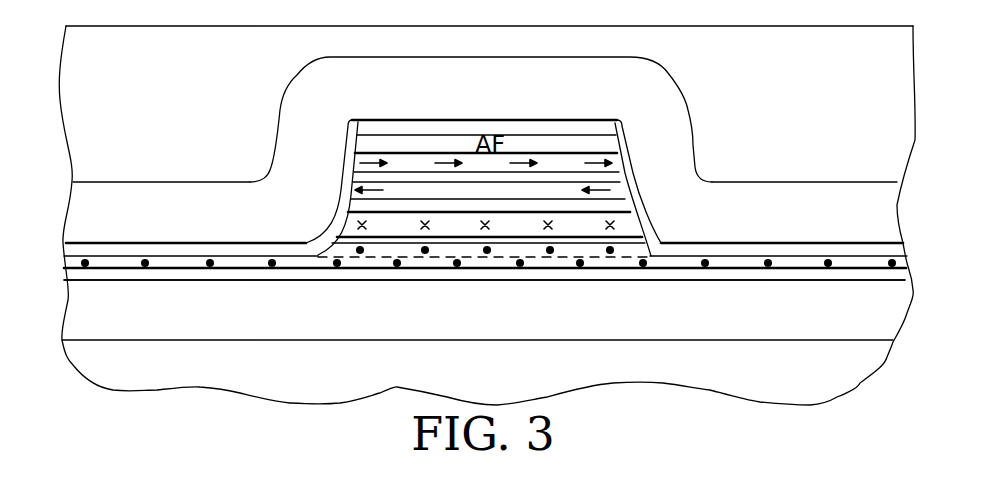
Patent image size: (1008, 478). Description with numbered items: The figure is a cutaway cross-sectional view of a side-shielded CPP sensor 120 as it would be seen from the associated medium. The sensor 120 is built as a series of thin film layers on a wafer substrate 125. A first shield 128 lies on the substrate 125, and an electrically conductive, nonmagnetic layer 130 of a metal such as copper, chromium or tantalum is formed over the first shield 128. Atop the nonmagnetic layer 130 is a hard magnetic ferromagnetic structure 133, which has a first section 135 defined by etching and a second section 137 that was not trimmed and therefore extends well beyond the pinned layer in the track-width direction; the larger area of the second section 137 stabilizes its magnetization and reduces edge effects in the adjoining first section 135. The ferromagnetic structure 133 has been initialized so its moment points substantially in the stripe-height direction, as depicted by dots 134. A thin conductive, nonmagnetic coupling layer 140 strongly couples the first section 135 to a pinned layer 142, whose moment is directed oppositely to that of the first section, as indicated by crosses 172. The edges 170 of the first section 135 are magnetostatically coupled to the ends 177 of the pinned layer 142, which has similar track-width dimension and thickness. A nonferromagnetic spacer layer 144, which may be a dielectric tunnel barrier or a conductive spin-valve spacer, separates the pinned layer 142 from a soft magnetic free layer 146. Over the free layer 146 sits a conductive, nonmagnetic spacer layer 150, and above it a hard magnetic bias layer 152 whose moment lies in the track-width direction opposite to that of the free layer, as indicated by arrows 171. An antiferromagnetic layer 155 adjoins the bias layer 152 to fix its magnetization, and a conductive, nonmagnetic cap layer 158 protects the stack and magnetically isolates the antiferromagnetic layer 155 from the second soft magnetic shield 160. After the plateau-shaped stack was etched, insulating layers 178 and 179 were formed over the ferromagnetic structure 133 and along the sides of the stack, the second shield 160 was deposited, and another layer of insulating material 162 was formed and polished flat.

The side-shielded CPP sensor 120 is at (262, 96).
The wafer substrate 125 is at (477, 358).
The first shield 128 is at (484, 301).
The nonmagnetic layer 130 is at (258, 281).
The ferromagnetic structure 133 is at (608, 270).
The dots 134 is at (147, 269).
The first section 135 is at (365, 270).
The second section 137 is at (121, 252).
The coupling layer 140 is at (515, 241).
The pinned layer 142 is at (445, 234).
The spacer layer 144 is at (600, 189).
The free layer 146 is at (342, 185).
The spacer layer 150 is at (578, 165).
The hard magnetic bias layer 152 is at (378, 152).
The antiferromagnetic layer 155 is at (533, 133).
The cap layer 158 is at (432, 119).
The second soft magnetic shield 160 is at (484, 158).
The insulating material 162 is at (485, 119).
The edges 170 is at (302, 237).
The arrows 171 is at (626, 170).
The crosses 172 is at (608, 218).
The ends 177 is at (322, 208).
The insulating layer 178 is at (208, 240).
The insulating layer 179 is at (766, 240).